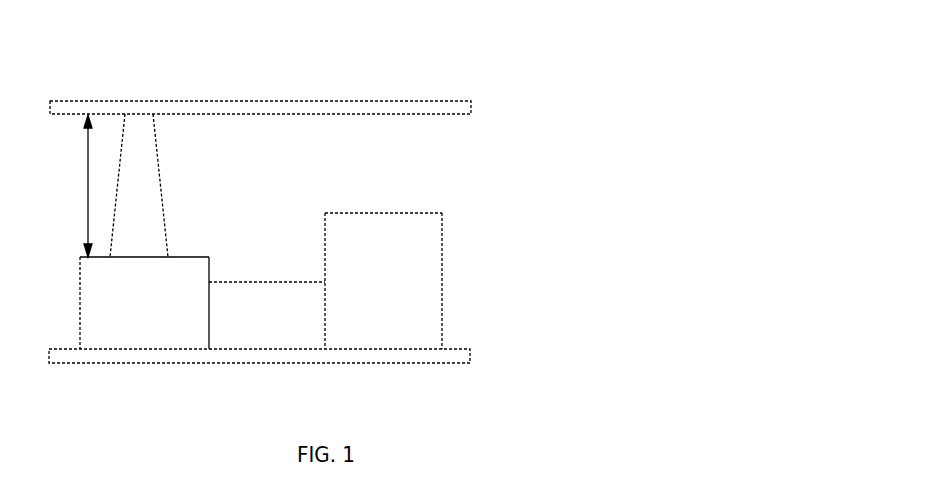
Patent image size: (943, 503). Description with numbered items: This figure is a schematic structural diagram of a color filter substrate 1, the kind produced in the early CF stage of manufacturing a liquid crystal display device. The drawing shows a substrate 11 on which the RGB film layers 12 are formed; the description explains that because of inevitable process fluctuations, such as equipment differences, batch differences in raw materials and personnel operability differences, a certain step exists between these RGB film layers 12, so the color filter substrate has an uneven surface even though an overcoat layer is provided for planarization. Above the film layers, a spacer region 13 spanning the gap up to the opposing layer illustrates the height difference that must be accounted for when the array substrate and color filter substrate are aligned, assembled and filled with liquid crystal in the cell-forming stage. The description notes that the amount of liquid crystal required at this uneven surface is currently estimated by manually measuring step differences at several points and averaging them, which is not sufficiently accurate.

The display device 1 is at (497, 138).
The substrate 11 is at (445, 355).
The light-emitting units (B, R, G sub-pixels) 12 is at (412, 313).
The light-transmitting region / cover plate opening 13 is at (131, 170).